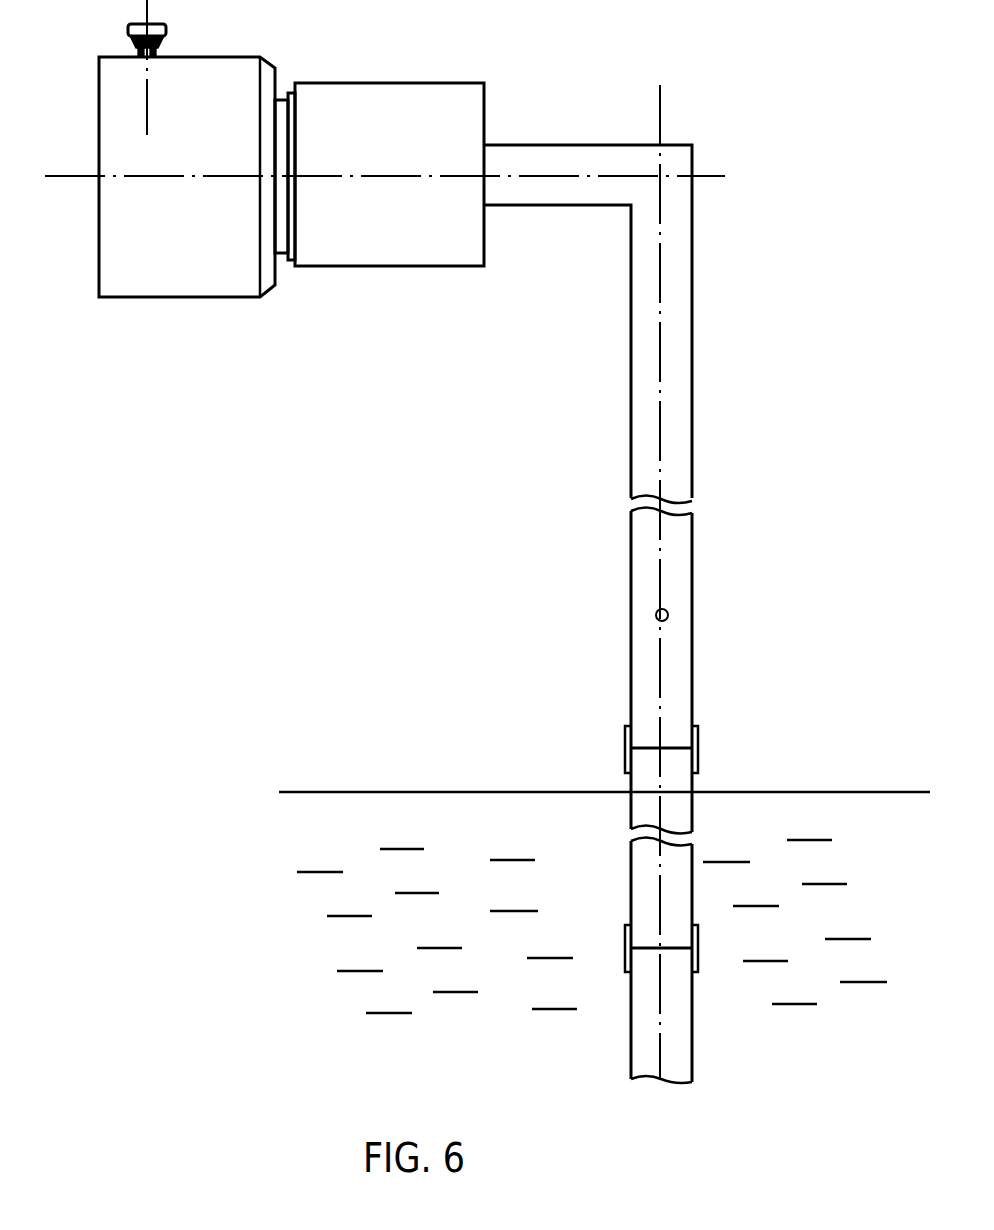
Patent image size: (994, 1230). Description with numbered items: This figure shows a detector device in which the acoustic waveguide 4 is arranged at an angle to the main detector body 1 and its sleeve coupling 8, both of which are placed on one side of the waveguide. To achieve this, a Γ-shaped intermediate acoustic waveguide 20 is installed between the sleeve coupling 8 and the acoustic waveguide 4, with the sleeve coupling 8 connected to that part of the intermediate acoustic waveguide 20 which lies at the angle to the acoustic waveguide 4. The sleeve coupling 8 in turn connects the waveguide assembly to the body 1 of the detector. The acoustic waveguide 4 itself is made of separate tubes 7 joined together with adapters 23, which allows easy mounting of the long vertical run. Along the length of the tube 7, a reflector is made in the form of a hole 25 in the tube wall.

The body of the detector 1 is at (198, 275).
The sleeve coupling 8 is at (405, 242).
The Γ-shaped intermediate acoustic waveguide 20 is at (668, 240).
The acoustic waveguide 4 is at (680, 492).
The holes 25 is at (668, 613).
The tube 7 is at (688, 668).
The adapters 23 is at (695, 748).